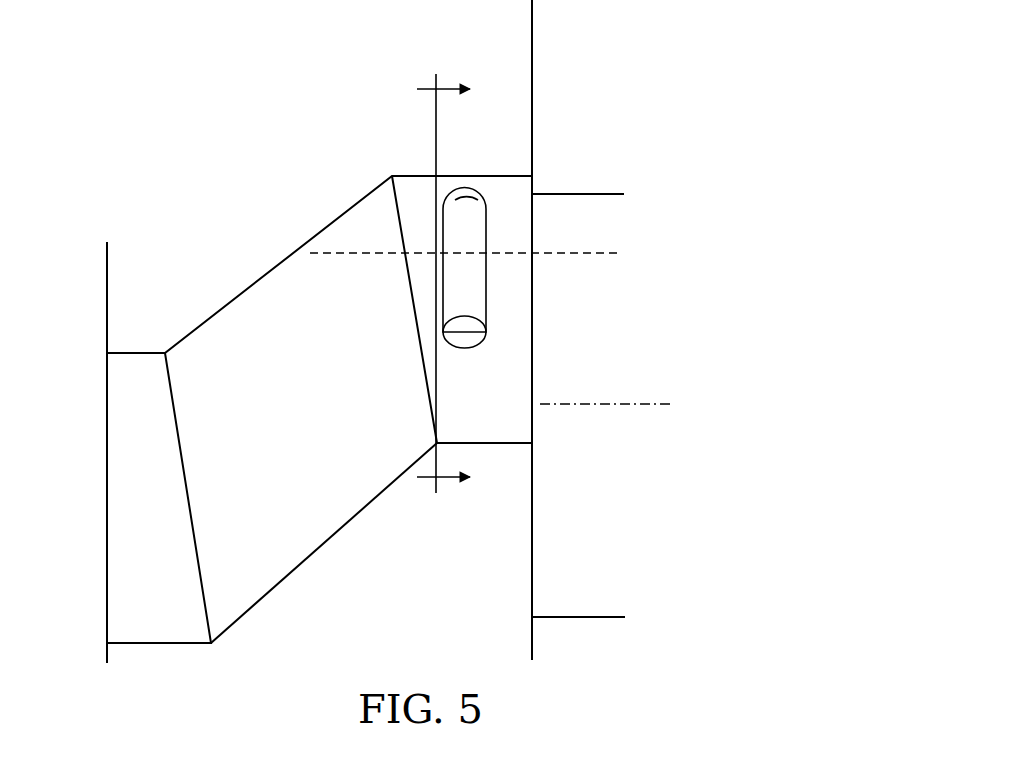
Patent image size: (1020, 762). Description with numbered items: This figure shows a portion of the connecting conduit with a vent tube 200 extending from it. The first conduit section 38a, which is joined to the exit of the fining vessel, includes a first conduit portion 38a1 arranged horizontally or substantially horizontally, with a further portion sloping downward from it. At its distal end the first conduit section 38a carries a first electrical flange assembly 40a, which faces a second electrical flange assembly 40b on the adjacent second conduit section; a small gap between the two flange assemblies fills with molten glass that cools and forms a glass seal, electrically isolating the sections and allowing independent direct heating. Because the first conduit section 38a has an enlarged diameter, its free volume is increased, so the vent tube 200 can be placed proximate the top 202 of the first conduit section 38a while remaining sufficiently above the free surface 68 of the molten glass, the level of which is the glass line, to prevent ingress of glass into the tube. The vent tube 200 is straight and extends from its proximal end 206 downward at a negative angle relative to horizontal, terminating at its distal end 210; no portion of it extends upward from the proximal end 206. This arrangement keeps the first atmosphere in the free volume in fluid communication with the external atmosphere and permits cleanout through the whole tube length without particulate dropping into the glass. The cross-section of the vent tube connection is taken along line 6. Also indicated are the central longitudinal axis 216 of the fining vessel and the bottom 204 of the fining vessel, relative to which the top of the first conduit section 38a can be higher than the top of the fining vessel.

The first electrical flange assembly 40a is at (540, 58).
The second electrical flange assembly 40b is at (110, 270).
The first conduit section 38a is at (331, 187).
The first conduit portion 38a1 is at (313, 553).
The line 6- 6 is at (458, 283).
The vent tube 200 is at (495, 279).
The top 202 is at (455, 176).
The proximal end 206 is at (467, 208).
The distal end 210 is at (486, 317).
The free surface 68 is at (573, 253).
The central longitudinal axis 216 is at (613, 407).
The bottom 204 is at (590, 618).